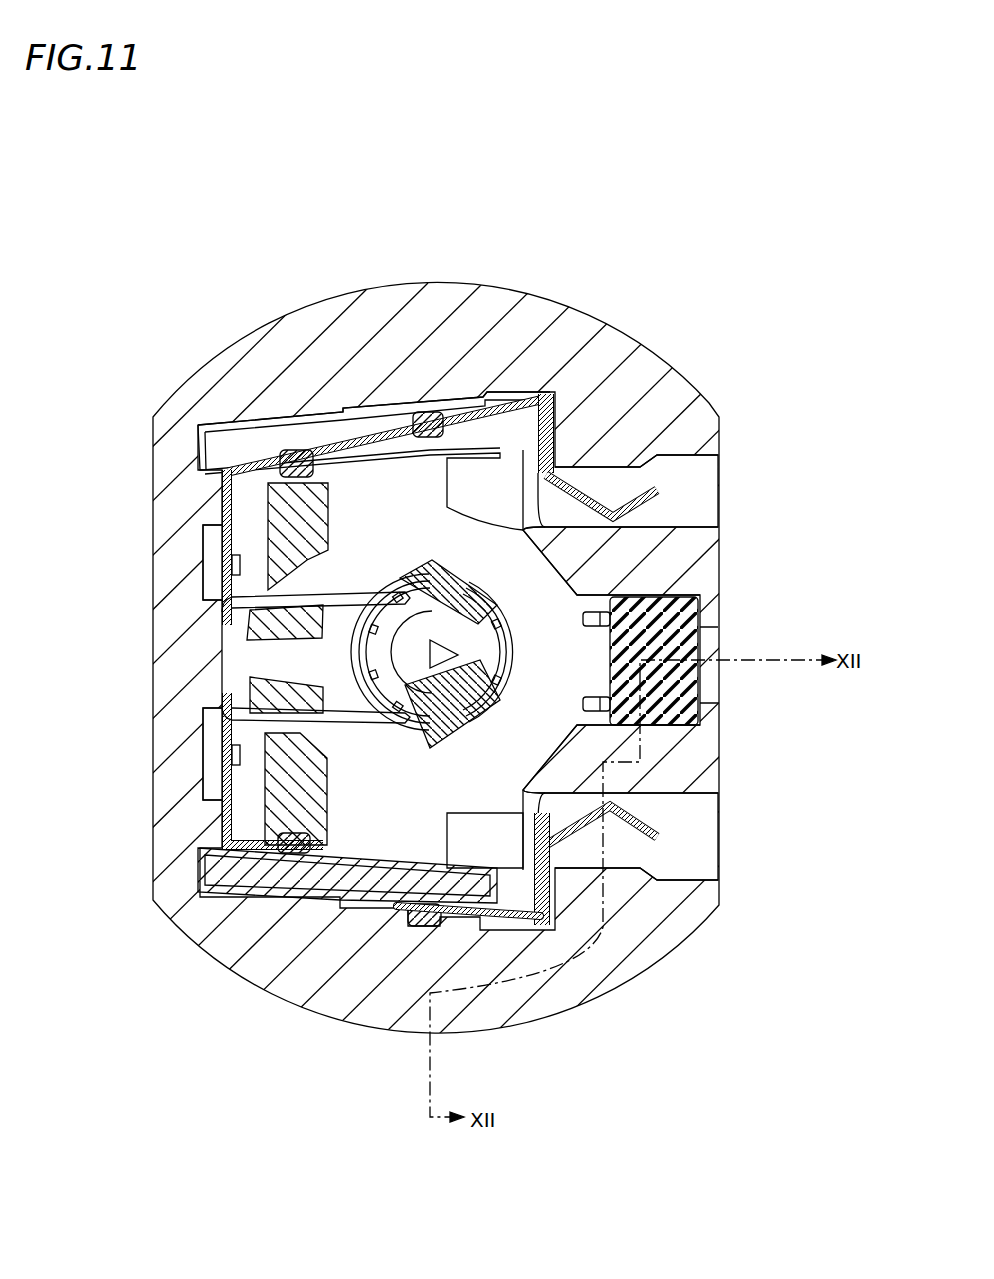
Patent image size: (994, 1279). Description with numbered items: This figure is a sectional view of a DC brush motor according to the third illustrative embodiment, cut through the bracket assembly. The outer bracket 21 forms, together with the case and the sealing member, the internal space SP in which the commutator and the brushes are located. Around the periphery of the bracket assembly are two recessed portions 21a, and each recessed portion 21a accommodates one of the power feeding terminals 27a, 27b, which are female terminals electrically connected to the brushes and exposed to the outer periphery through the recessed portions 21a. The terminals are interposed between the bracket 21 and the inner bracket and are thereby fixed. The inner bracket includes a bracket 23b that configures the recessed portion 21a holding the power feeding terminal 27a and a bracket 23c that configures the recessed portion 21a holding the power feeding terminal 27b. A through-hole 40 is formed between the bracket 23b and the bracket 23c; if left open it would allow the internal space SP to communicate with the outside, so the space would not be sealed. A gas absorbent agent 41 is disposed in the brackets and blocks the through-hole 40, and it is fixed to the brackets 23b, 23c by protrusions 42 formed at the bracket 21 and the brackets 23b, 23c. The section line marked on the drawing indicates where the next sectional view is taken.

The bracket 21 is at (690, 400).
The recessed portion 21a is at (706, 468).
The power feeding terminal 27a is at (690, 502).
The power feeding terminal 27b is at (690, 844).
The bracket 23b is at (690, 564).
The bracket 23c is at (690, 778).
The gas absorbent agent 41 is at (690, 650).
The through-hole 40 is at (714, 692).
The protrusions 42 is at (582, 704).
The internal space SP is at (396, 510).